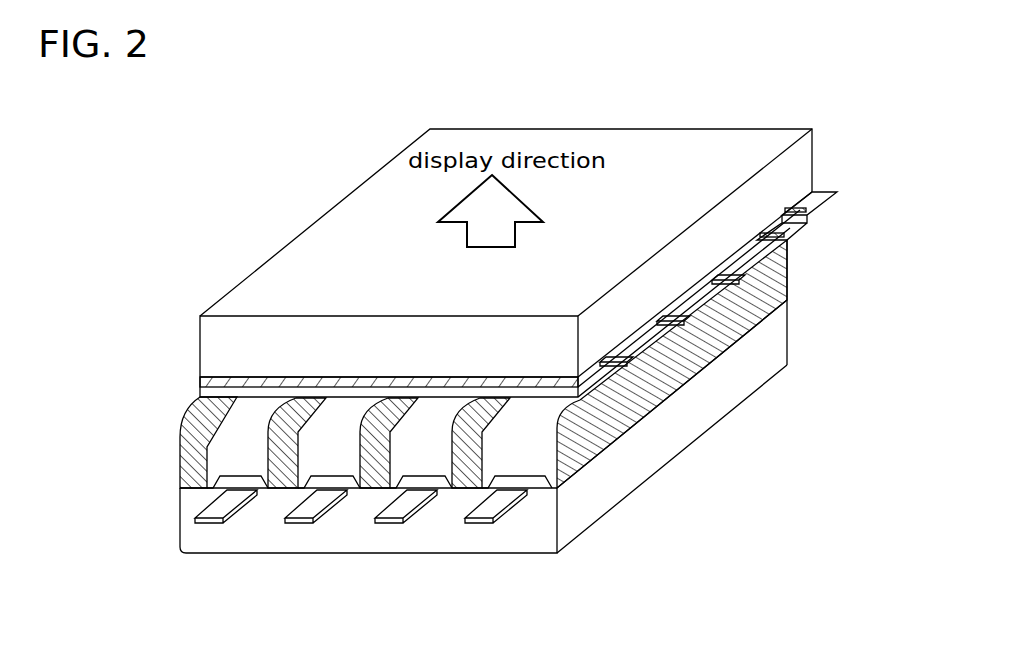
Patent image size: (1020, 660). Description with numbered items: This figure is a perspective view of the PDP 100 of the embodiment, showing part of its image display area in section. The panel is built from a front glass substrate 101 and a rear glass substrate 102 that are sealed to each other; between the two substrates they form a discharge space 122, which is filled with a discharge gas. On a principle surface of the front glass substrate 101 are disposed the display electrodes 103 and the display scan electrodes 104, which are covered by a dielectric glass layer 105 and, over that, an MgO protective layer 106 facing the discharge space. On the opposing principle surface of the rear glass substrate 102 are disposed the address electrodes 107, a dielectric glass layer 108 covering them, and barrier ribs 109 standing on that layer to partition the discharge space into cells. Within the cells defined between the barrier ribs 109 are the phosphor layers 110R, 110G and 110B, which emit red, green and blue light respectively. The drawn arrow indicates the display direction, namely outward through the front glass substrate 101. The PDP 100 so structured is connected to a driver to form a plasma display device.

The PDP 100 is at (795, 337).
The front glass substrate 101 is at (207, 332).
The rear glass substrate 102 is at (445, 545).
The display electrodes 103 is at (637, 325).
The display scan electrodes 104 is at (790, 230).
The dielectric glass layer 105 is at (200, 378).
The MgO protective layer 106 is at (198, 395).
The address electrodes 107 is at (220, 508).
The dielectric glass layer 108 is at (188, 486).
The barrier ribs 109 is at (450, 447).
The phosphor layer 110R is at (225, 475).
The phosphor layer 110G is at (320, 487).
The phosphor layer 110B is at (402, 455).
The discharge space 122 is at (524, 415).